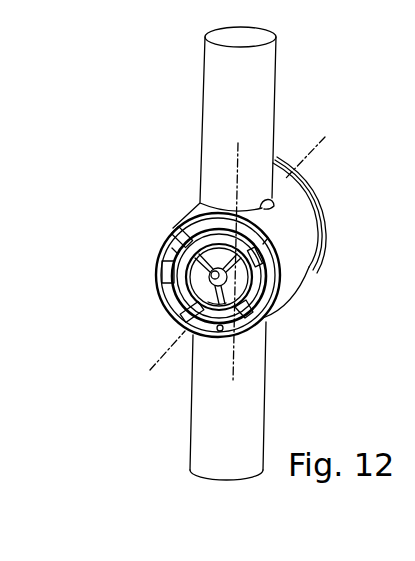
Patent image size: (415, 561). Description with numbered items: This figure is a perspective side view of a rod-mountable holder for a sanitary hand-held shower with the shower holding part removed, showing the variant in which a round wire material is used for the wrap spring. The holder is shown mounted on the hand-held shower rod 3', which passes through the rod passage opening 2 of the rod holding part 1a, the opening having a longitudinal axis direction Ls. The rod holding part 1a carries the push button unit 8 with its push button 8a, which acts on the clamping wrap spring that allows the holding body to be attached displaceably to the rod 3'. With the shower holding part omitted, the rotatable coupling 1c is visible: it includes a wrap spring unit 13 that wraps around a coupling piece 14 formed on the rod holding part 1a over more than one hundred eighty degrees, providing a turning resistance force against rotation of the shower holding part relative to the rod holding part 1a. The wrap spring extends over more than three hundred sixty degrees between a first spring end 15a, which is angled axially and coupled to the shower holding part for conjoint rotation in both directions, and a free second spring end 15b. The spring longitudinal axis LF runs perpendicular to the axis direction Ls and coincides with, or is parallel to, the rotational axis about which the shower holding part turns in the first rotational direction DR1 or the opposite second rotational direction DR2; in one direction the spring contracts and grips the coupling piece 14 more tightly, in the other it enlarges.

The hand-held shower rod 3' is at (259, 119).
The longitudinal axis direction of the rod passage opening Ls is at (236, 168).
The rod holding part 1a is at (300, 253).
The rotatable coupling 1c is at (262, 305).
The rod passage opening 2 is at (276, 200).
The push button unit 8 is at (324, 229).
The push button 8a is at (293, 177).
The wrap spring unit 13 is at (249, 318).
The coupling piece 14 is at (187, 278).
The first spring end 15a is at (268, 256).
The second spring end 15b is at (183, 244).
The spring longitudinal axis LF is at (183, 334).
The first rotational direction DR1 is at (175, 356).
The second rotational direction DR2 is at (141, 364).